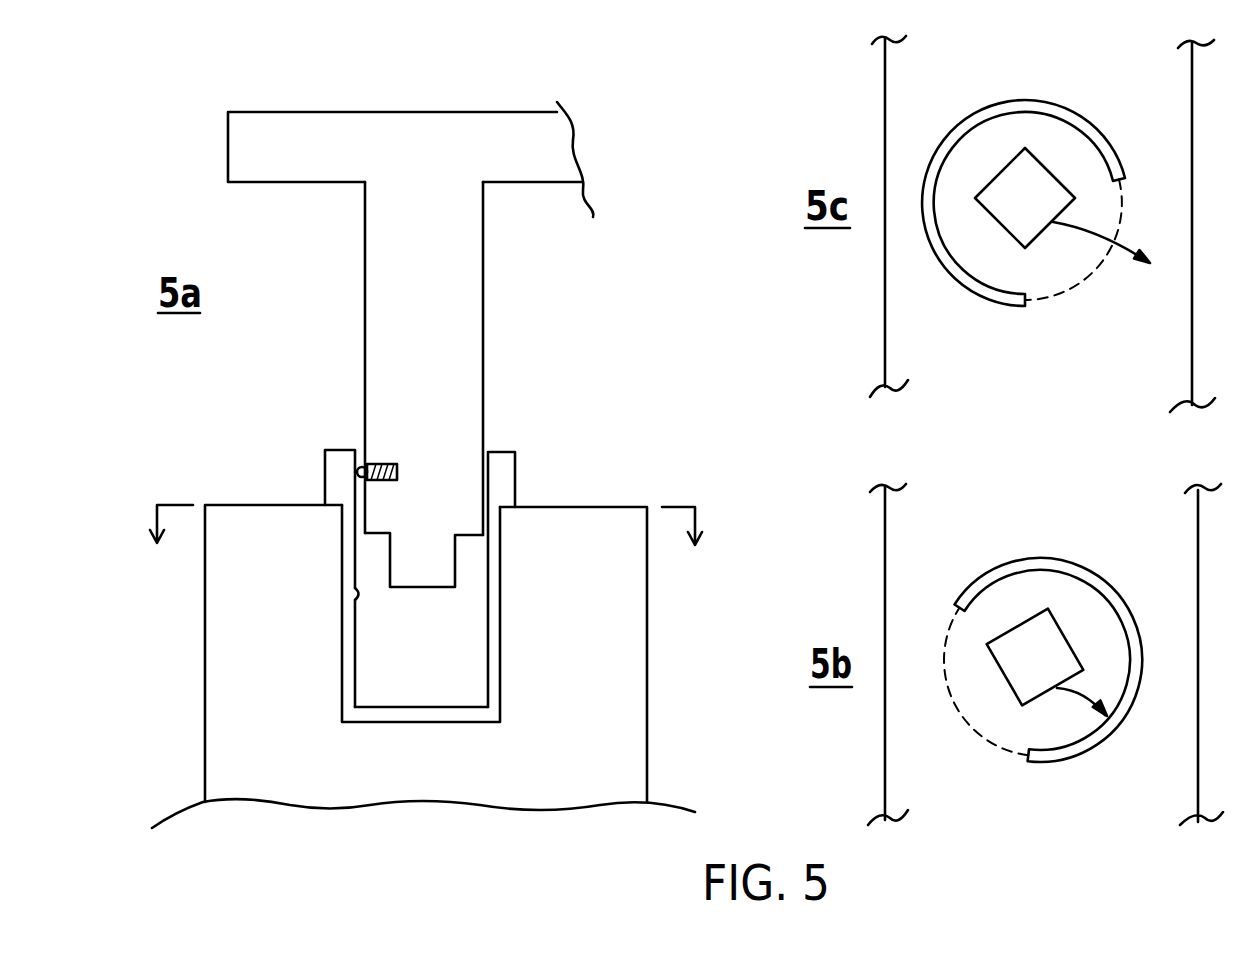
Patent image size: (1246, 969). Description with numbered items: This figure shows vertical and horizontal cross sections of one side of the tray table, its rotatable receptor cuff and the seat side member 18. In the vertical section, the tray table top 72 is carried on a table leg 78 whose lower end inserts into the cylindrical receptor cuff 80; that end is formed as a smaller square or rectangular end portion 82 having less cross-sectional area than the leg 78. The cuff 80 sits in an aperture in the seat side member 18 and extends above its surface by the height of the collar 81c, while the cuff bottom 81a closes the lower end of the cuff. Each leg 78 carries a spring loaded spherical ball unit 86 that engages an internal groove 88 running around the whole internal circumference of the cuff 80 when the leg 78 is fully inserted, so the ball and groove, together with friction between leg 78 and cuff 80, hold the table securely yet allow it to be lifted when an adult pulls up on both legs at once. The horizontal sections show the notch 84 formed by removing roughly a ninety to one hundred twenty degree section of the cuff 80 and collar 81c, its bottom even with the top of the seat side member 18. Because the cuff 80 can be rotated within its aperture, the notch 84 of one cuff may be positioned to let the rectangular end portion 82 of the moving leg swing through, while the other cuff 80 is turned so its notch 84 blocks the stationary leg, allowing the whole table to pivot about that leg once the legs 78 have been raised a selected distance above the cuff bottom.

The housing block 18 is at (225, 695).
The head of T-shaped member 72 is at (327, 135).
The table leg 78 is at (463, 260).
The receptor cuff 80 is at (313, 563).
The clamp bottom 81a is at (407, 723).
The collar 81c is at (517, 477).
The end portion 82 is at (420, 567).
The notch 84 is at (1097, 272).
The spring loaded spherical ball unit 86 is at (388, 463).
The internal groove 88 is at (353, 596).